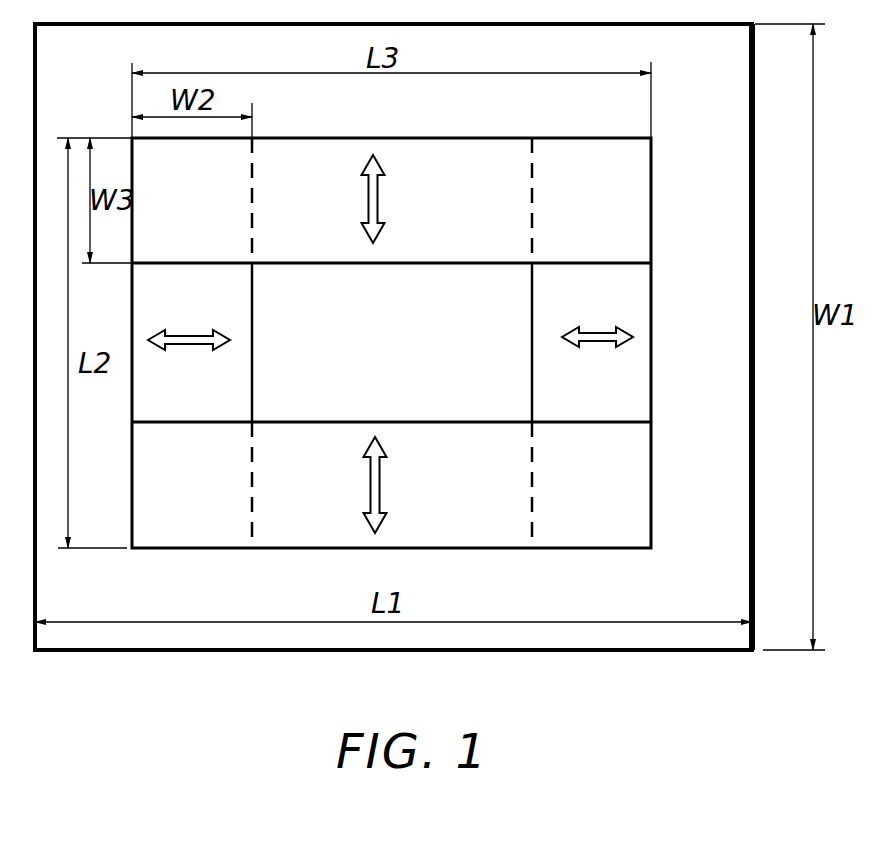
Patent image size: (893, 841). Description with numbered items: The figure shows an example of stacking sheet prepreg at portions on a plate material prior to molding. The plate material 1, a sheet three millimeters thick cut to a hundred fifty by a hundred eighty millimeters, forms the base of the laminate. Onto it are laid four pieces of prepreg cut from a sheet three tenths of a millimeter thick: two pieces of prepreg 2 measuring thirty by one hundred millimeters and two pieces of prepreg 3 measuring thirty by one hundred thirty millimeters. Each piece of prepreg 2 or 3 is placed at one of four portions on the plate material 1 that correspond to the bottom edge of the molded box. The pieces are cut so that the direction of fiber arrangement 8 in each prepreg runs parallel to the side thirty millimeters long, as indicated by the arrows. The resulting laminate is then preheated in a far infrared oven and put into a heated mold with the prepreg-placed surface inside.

The plate material 1 is at (728, 122).
The prepreg piece 2 is at (625, 383).
The prepreg piece 3 is at (435, 173).
The direction of fiber arrangement 8 is at (602, 328).